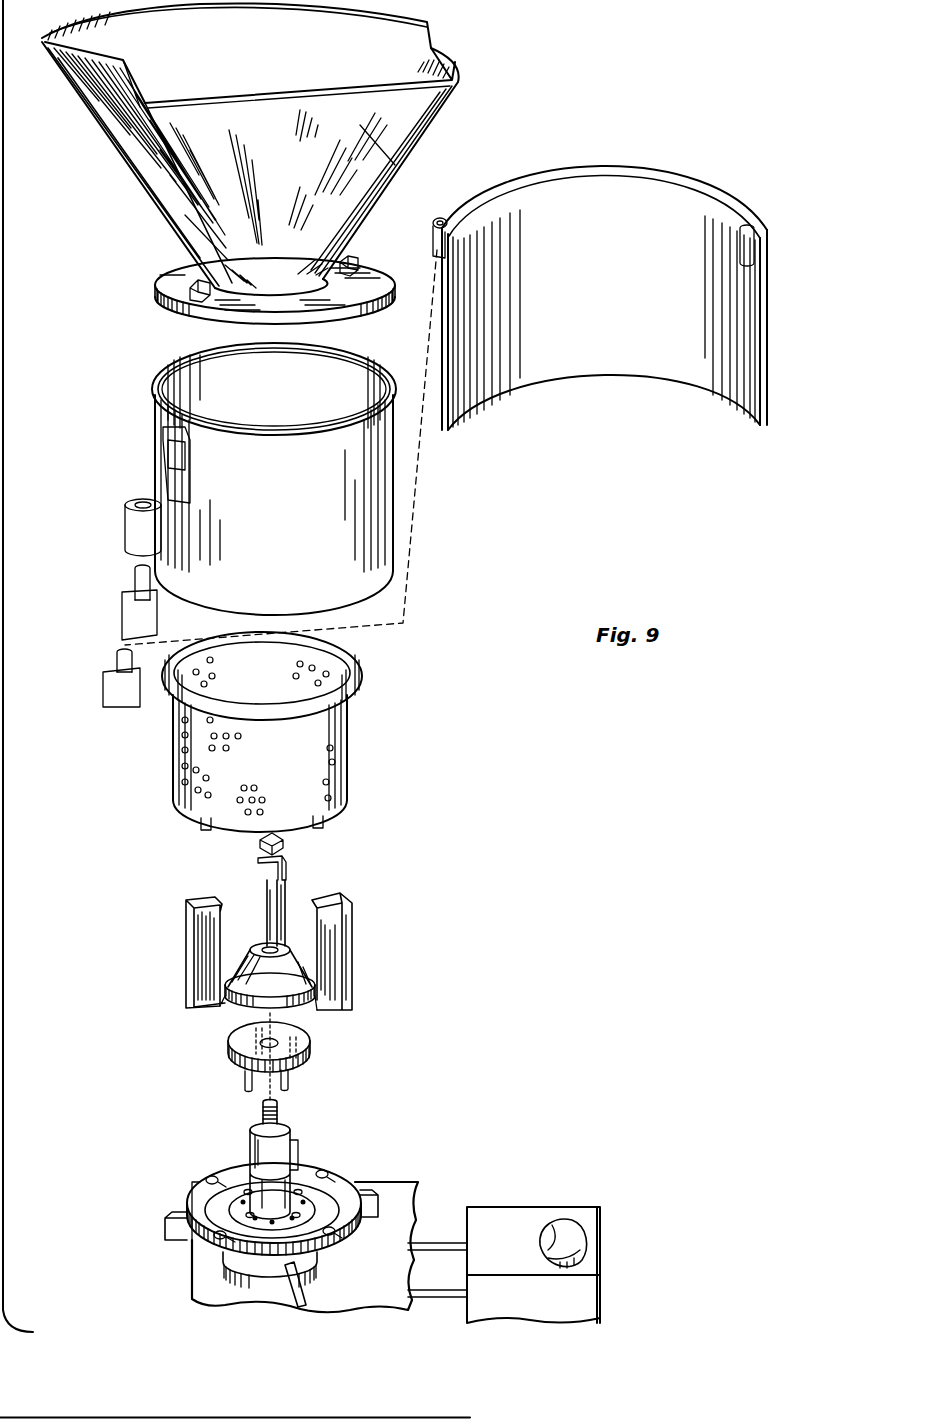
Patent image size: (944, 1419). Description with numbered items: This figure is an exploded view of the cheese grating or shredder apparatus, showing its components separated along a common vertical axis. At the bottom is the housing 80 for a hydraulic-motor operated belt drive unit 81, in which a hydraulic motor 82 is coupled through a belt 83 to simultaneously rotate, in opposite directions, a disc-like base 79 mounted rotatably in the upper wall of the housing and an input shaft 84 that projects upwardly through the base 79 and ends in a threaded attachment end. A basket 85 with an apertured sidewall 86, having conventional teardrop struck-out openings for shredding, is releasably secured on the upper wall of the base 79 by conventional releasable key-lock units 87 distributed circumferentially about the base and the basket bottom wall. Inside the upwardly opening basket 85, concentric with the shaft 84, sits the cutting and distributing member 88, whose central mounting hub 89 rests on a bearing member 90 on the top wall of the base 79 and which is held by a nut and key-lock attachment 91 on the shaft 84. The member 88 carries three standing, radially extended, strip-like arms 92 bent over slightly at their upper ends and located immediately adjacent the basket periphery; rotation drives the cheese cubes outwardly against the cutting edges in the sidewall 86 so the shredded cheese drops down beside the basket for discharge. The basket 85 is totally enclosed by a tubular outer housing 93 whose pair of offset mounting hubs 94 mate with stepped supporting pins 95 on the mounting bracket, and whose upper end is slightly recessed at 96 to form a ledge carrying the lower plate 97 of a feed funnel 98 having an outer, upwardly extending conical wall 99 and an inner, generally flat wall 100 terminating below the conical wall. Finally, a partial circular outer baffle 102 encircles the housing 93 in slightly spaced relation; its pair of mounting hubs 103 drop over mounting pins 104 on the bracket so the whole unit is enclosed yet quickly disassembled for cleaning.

The disc-like base 79 is at (345, 1190).
The housing 80 is at (403, 1185).
The belt drive unit 81 is at (588, 1203).
The hydraulic motor 82 is at (563, 1243).
The belt 83 is at (443, 1243).
The input shaft 84 is at (262, 1150).
The basket 85 is at (343, 807).
The apertured sidewall 86 is at (340, 755).
The key-lock units 87 is at (203, 828).
The cutting and distributing member 88 is at (269, 921).
The central mounting hub 89 is at (287, 967).
The bearing member 90 is at (312, 1052).
The key-lock attachment 91 is at (272, 1122).
The radially extended arms 92 is at (215, 935).
The tubular outer housing 93 is at (375, 547).
The mounting hubs 94 is at (125, 525).
The stepped supporting pins 95 is at (133, 576).
The recess 96 is at (350, 358).
The lower plate 97 is at (383, 272).
The feed funnel 98 is at (378, 123).
The conical wall 99 is at (150, 190).
The flat wall 100 is at (377, 145).
The outer baffle 102 is at (608, 362).
The mounting hubs 103 is at (440, 217).
The mounting pins 104 is at (117, 655).